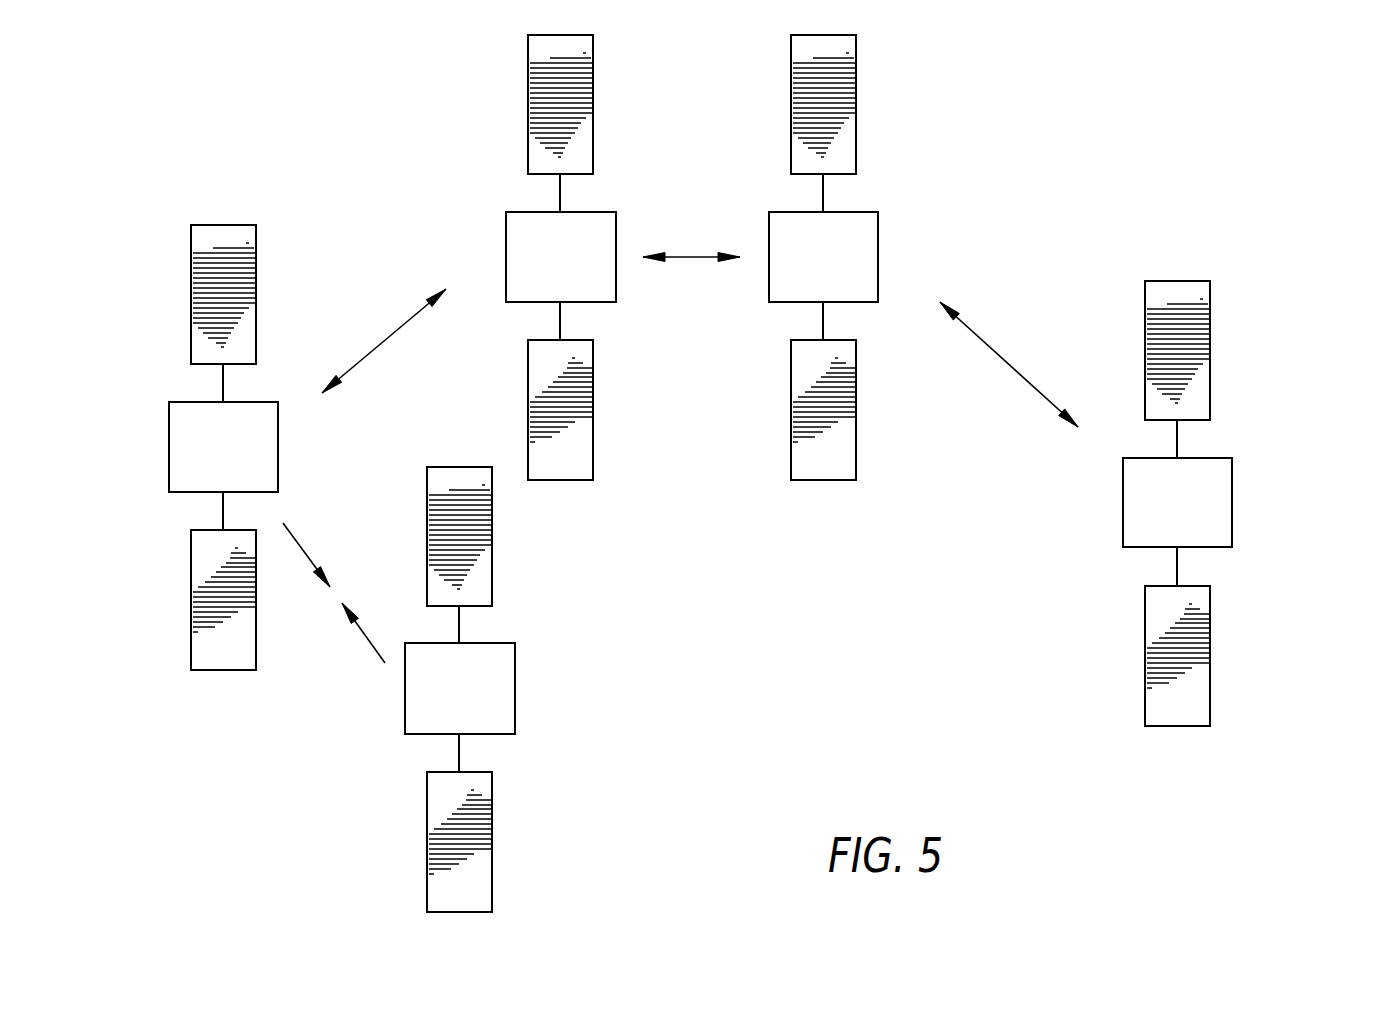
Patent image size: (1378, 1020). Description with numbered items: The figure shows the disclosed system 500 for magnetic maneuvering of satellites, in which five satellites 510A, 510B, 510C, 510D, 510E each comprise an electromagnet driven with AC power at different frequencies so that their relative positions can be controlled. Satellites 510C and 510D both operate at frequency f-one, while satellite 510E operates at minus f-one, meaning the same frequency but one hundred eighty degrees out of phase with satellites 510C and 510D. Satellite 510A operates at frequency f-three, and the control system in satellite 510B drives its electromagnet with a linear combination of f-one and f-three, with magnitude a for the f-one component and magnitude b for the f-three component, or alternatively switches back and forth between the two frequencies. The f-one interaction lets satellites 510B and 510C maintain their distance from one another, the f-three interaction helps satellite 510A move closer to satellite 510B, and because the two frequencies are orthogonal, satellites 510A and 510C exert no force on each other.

The system for magnetic maneuvering of satellites 500 is at (807, 760).
The satellite 510A is at (1232, 483).
The satellite 510B is at (878, 235).
The satellite 510C is at (506, 237).
The satellite 510D is at (169, 422).
The satellite 510E is at (515, 657).